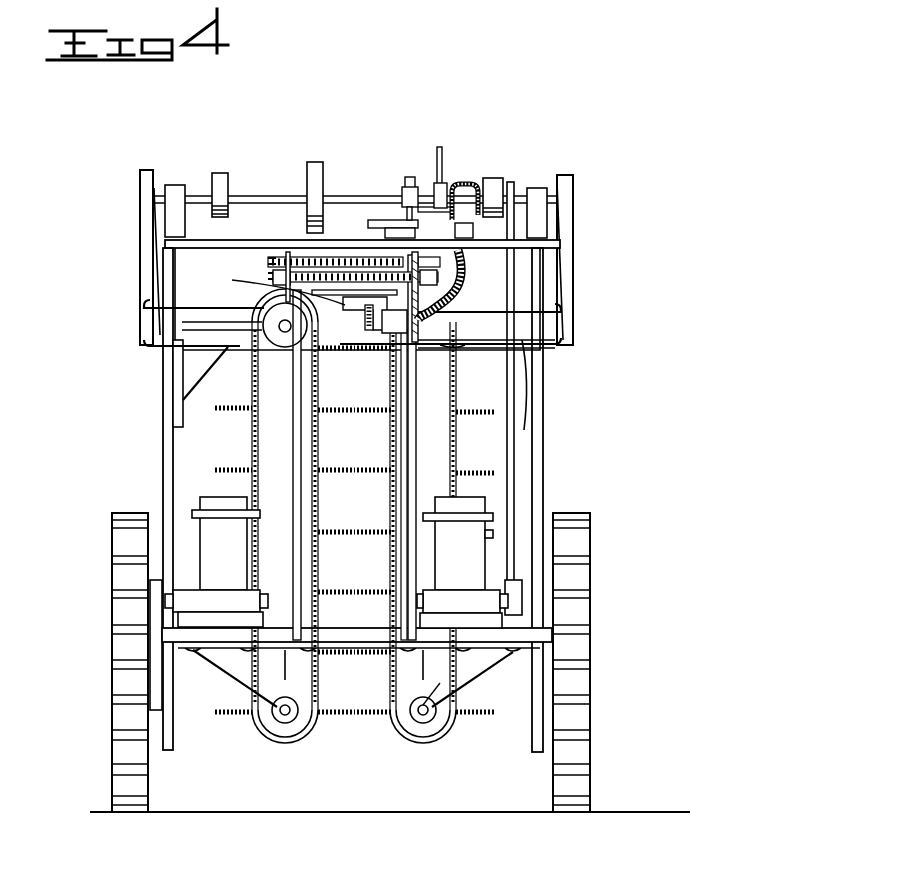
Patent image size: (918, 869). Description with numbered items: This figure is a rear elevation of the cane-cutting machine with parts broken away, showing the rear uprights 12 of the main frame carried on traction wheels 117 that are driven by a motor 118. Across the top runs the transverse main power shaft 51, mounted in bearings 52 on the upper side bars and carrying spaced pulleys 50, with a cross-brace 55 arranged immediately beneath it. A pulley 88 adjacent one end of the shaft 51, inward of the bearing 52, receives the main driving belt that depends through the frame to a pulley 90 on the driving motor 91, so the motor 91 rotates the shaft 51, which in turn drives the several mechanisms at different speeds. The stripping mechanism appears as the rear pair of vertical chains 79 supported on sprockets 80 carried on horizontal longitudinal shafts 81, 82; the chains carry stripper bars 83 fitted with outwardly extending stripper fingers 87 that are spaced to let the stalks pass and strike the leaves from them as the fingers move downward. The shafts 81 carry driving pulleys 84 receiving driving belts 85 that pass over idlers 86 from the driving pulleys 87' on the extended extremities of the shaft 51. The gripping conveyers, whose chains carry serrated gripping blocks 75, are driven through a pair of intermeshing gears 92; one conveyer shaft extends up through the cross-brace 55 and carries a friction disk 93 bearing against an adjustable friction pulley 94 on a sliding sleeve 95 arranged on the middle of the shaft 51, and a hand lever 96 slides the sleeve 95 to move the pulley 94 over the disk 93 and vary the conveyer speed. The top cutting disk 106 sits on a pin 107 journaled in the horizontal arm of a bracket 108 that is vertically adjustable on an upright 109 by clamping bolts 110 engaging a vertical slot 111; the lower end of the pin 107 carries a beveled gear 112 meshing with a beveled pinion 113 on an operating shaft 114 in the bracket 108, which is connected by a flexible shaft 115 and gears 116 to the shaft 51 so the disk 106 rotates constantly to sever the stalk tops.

The rear upright 12 is at (168, 443).
The pulley 50 is at (222, 180).
The main power shaft 51 is at (262, 204).
The bearing 52 is at (176, 225).
The cross-brace 55 is at (252, 240).
The gripping block 75 is at (285, 278).
The rear chains 79 is at (253, 384).
The sprocket 80 is at (290, 350).
The shaft 81 is at (280, 328).
The shaft 82 is at (440, 684).
The stripper bar 83 is at (513, 384).
The driving pulley 84 is at (262, 318).
The driving belt 85 is at (154, 275).
The idler 86 is at (145, 340).
The stripper finger 87 is at (355, 530).
The driving pulley 87' is at (355, 257).
The pulley 88 is at (516, 186).
The pulley 90 is at (503, 588).
The driving motor 91 is at (462, 562).
The intermeshing gear 92 is at (368, 262).
The friction disk 93 is at (378, 220).
The friction pulley 94 is at (410, 176).
The sliding sleeve 95 is at (430, 212).
The hand lever 96 is at (441, 150).
The top cutting disk 106 is at (269, 283).
The pin 107 is at (368, 305).
The bracket 108 is at (395, 322).
The upright 109 is at (407, 437).
The clamping bolt 110 is at (416, 398).
The vertical slot 111 is at (453, 346).
The beveled gear 112 is at (312, 292).
The beveled pinion 113 is at (369, 332).
The operating shaft 114 is at (446, 322).
The flexible shaft 115 is at (466, 283).
The gears 116 is at (457, 200).
The traction wheel 117 is at (116, 604).
The motor 118 is at (216, 562).